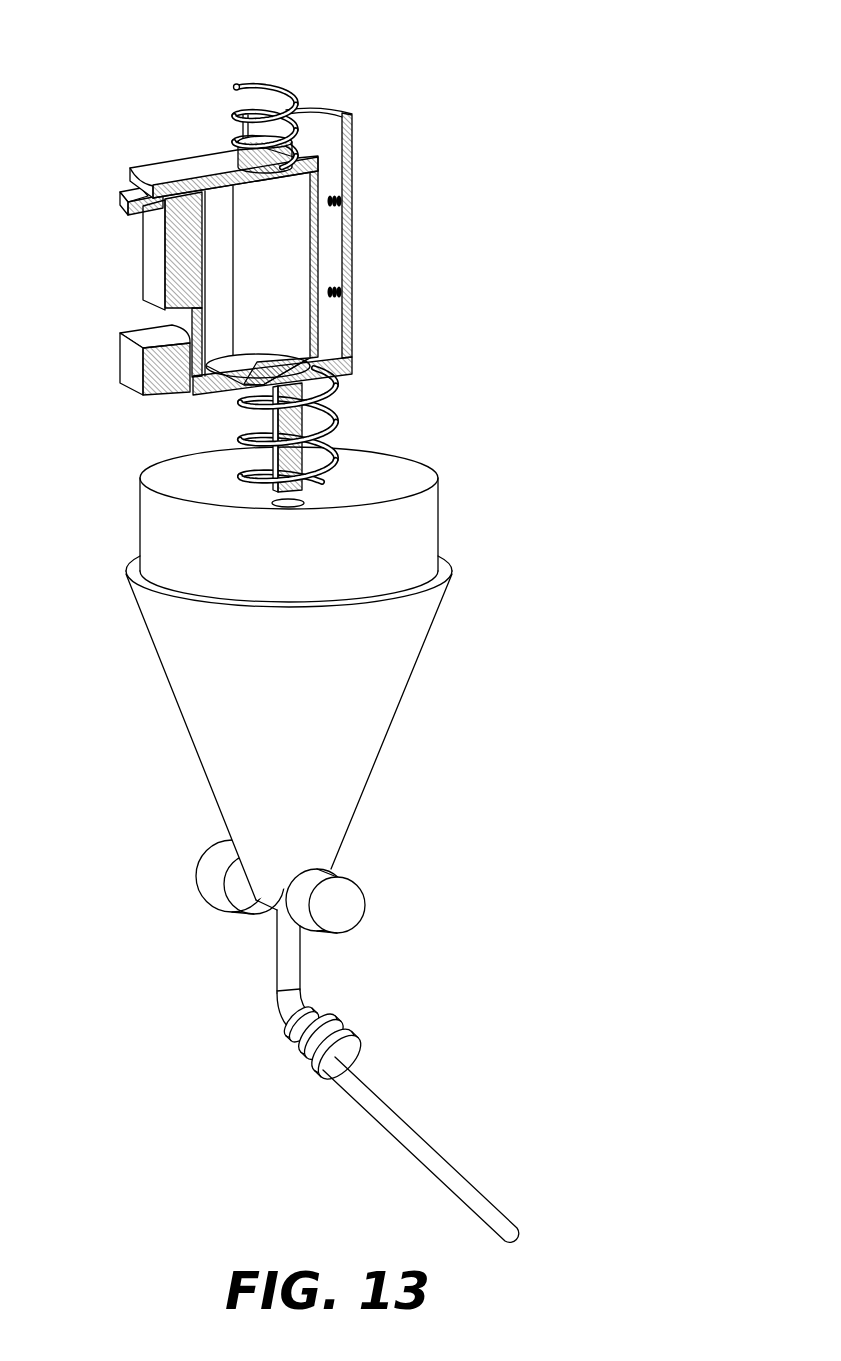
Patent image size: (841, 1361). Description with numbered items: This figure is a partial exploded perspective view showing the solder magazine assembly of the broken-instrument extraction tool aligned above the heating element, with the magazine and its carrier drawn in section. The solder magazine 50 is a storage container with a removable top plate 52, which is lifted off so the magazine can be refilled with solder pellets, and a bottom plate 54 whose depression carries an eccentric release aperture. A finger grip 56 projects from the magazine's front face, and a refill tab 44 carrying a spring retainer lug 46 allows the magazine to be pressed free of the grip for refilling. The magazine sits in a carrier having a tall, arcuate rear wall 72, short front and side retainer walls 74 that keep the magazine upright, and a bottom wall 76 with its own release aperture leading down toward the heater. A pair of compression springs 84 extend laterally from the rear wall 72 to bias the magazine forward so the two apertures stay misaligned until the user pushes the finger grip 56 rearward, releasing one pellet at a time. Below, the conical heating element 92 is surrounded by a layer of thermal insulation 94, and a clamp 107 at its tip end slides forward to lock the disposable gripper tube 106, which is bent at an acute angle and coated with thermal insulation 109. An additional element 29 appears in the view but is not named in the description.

The hopper assembly 29 is at (418, 477).
The refill tab 44 is at (127, 203).
The spring retainer lug 46 is at (278, 80).
The solder magazine 50 is at (293, 238).
The top plate 52 is at (305, 175).
The bottom plate 54 is at (318, 360).
The finger grip 56 is at (143, 253).
The rear wall 72 is at (330, 138).
The front and side retainer walls 74 is at (130, 363).
The bottom wall 76 is at (203, 397).
The compression springs 84 is at (340, 203).
The conical heating element 92 is at (425, 538).
The thermal insulation 94 is at (388, 685).
The gripper tube 106 is at (423, 1147).
The clamp 107 is at (355, 900).
The thermal insulation 109 is at (337, 420).